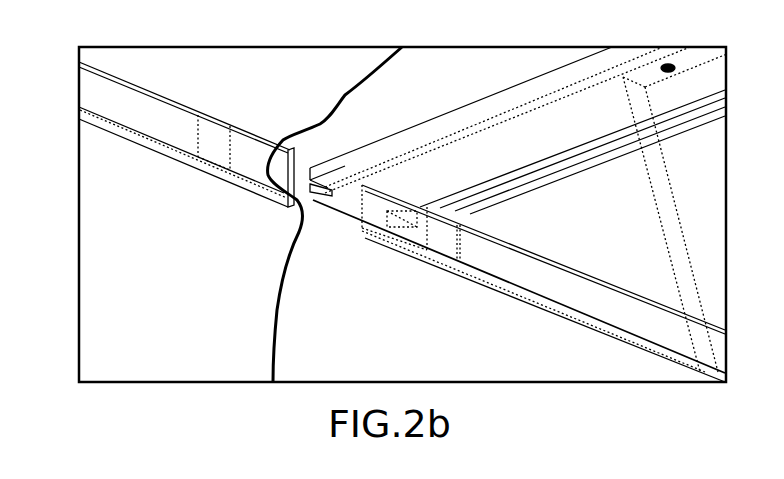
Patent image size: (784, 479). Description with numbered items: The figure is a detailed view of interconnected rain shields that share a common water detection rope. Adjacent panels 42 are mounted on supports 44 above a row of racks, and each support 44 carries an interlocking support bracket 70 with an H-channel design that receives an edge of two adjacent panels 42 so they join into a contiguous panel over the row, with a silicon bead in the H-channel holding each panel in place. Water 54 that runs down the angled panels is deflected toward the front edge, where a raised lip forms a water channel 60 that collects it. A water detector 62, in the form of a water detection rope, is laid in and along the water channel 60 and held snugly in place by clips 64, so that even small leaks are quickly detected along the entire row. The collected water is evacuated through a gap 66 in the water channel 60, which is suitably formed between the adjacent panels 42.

The panel 42 is at (250, 73).
The supports 44 is at (707, 222).
The water 54 is at (355, 90).
The water channel 60 is at (110, 98).
The water detector 62 is at (130, 127).
The clips 64 is at (420, 237).
The gap 66 is at (300, 212).
The interlocking support bracket 70 is at (310, 177).